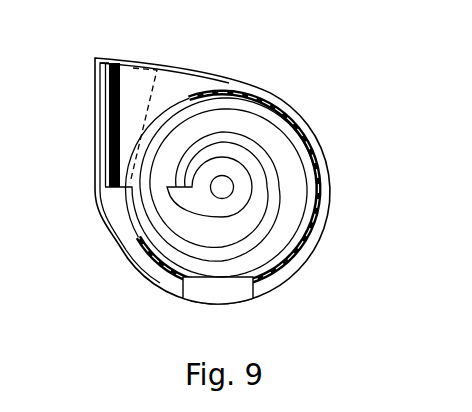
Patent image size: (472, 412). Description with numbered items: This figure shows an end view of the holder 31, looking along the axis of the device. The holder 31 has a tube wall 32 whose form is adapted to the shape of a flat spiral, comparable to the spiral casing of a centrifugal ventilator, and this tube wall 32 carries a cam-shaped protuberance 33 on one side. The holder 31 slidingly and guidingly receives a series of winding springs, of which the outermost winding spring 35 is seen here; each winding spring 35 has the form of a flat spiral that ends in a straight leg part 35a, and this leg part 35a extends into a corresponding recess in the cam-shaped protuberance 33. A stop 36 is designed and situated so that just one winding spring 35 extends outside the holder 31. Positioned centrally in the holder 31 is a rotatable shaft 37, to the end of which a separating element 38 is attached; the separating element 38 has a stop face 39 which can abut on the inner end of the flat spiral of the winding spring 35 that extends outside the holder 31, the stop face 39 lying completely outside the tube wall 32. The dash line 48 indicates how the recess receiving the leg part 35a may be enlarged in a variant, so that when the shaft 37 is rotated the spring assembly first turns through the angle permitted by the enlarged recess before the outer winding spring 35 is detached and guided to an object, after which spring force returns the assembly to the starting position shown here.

The holder 31 is at (88, 181).
The tube wall 32 is at (316, 138).
The cam-shaped protuberance 33 is at (202, 88).
The winding spring 35 is at (312, 190).
The straight leg part 35a is at (112, 98).
The stop 36 is at (213, 297).
The rotatable shaft 37 is at (198, 203).
The separating element 38 is at (231, 178).
The stop face 39 is at (167, 190).
The dash line 48 is at (155, 92).